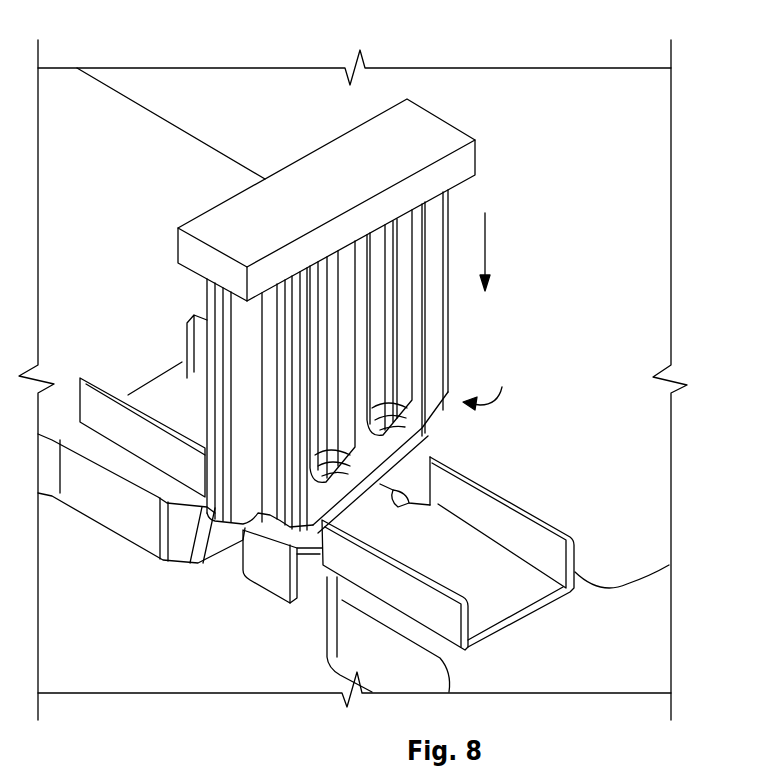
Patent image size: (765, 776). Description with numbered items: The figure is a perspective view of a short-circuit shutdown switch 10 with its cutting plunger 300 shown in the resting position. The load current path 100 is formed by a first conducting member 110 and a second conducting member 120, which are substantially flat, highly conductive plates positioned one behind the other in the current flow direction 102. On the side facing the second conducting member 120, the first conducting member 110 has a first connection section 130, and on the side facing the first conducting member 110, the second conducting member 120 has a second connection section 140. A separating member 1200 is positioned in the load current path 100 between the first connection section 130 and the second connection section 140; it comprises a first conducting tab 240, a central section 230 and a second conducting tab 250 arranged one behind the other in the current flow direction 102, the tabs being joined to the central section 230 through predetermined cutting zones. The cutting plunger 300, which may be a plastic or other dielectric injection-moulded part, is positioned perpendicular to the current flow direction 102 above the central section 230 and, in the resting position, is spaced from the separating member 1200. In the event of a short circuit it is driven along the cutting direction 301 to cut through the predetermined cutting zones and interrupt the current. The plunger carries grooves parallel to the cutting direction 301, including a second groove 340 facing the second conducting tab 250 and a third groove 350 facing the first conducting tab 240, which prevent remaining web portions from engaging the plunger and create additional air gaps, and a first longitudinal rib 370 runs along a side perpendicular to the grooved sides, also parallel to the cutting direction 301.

The short-circuit shutdown switch 10 is at (595, 55).
The load current path 100 is at (353, 579).
The current flow direction 102 is at (492, 386).
The first conducting member 110 is at (190, 150).
The second conducting member 120 is at (607, 595).
The first connection section 130 is at (120, 522).
The second connection section 140 is at (390, 672).
The central section 230 is at (310, 533).
The first conducting tab 240 is at (181, 377).
The second conducting tab 250 is at (520, 588).
The cutting plunger 300 is at (290, 315).
The cutting direction 301 is at (490, 246).
The second groove 340 is at (325, 290).
The third groove 350 is at (380, 265).
The first longitudinal rib 370 is at (237, 418).
The separating member 1200 is at (378, 498).